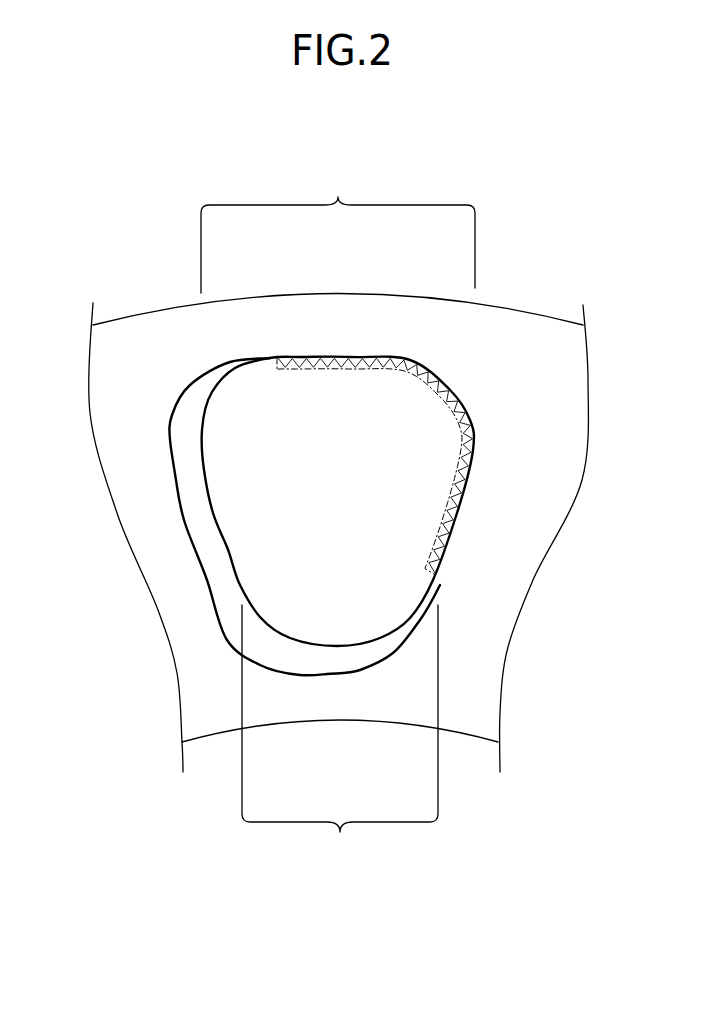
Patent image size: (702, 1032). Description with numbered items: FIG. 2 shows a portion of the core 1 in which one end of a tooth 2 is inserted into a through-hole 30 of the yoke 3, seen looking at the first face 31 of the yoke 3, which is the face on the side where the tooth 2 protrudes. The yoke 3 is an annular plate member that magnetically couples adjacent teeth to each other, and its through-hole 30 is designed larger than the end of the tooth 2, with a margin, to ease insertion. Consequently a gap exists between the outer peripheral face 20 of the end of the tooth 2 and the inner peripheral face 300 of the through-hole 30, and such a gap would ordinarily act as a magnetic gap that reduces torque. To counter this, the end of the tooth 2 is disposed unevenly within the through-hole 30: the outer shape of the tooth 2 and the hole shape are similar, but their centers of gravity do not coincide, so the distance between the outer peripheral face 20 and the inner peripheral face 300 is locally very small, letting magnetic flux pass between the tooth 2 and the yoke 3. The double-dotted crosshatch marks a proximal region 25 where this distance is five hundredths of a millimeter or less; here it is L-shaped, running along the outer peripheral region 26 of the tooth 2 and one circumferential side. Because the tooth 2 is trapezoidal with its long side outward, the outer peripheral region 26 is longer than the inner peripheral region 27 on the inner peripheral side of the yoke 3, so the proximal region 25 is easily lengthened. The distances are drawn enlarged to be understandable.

The core 1 is at (309, 515).
The tooth 2 is at (238, 425).
The yoke 3 is at (341, 485).
The first face 31 is at (551, 328).
The outer peripheral face 20 is at (208, 462).
The through-hole 30 is at (193, 527).
The inner peripheral face 300 is at (198, 572).
The proximal region 25 is at (368, 357).
The outer peripheral region 26 is at (338, 230).
The inner peripheral region 27 is at (340, 734).